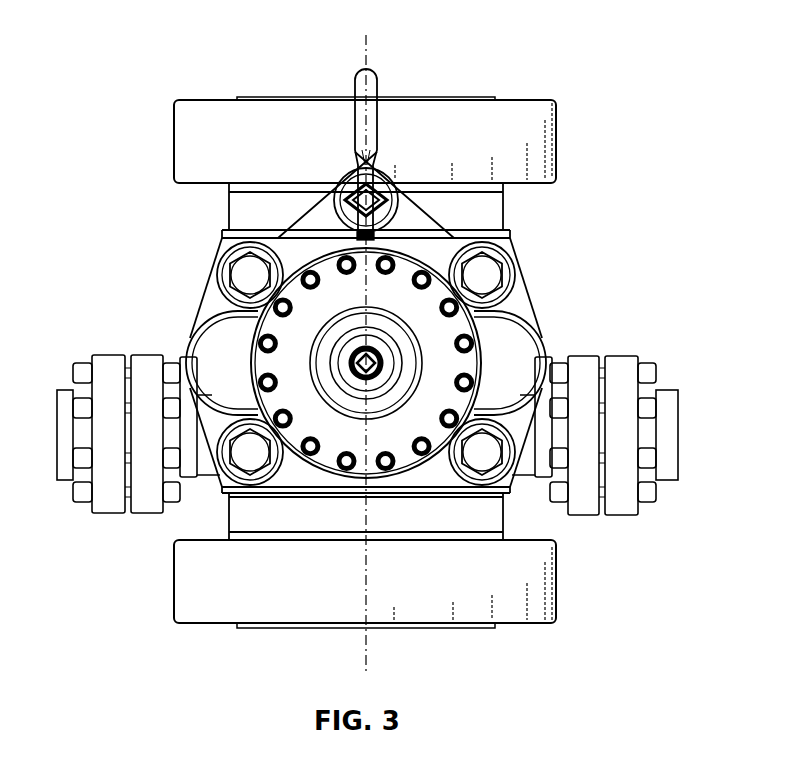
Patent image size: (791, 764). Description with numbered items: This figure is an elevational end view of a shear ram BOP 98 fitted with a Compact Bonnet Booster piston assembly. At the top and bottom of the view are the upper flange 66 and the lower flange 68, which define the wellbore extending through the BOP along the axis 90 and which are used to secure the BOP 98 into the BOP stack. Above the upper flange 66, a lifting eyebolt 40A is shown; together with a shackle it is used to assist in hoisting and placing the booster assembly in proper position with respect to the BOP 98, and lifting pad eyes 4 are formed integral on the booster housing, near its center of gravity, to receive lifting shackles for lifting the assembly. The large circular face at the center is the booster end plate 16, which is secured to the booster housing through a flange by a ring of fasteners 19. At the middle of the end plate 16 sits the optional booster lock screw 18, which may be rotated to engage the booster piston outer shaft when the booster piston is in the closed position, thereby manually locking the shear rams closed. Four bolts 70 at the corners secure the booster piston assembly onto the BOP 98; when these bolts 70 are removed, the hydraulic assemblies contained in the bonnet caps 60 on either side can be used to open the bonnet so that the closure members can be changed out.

The shear ram BOP 98 is at (425, 56).
The axis 90 is at (365, 48).
The upper flange 66 is at (452, 100).
The lower flange 68 is at (470, 630).
The lifting eyebolt 40A is at (393, 176).
The lifting pad eyes 4 is at (302, 226).
The bolts 70 is at (242, 277).
The booster end plate 16 is at (287, 362).
The bonnet caps 60 is at (214, 346).
The booster lock screw 18 is at (382, 367).
The fasteners 19 is at (309, 444).